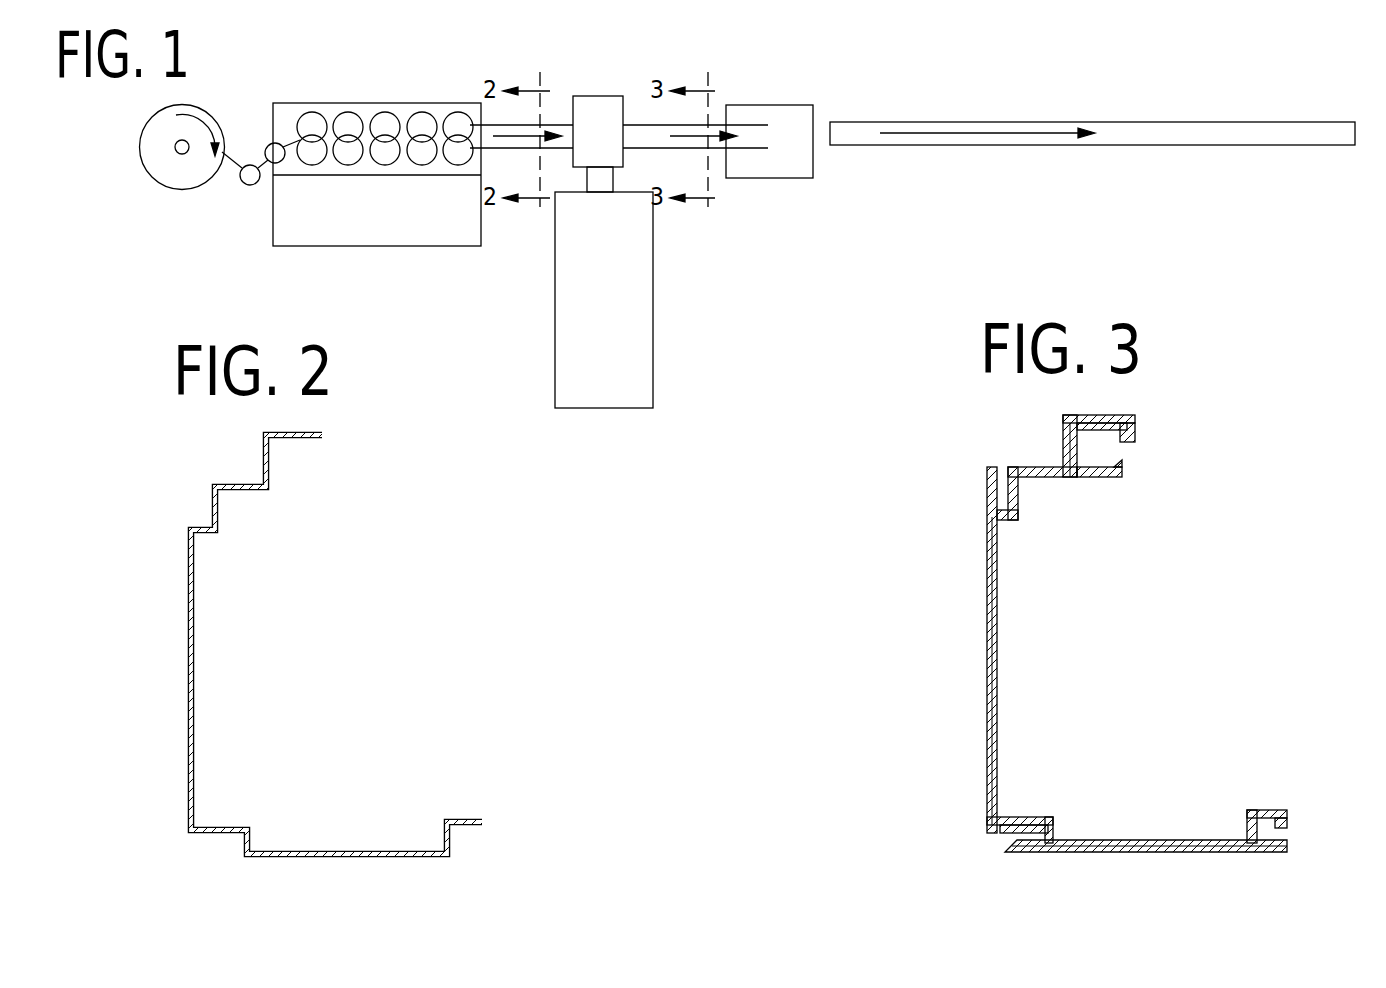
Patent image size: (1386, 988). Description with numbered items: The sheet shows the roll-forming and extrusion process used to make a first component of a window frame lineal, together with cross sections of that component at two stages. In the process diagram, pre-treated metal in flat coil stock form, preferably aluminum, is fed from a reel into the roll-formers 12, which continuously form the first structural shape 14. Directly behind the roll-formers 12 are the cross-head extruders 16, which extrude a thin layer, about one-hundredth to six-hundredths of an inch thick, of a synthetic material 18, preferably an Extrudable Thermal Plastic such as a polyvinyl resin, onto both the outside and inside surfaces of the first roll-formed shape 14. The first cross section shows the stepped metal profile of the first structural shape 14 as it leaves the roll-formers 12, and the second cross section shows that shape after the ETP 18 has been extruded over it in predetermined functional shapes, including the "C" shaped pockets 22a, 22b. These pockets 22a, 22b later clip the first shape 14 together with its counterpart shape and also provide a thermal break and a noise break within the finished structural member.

In FIG. 1, the roll-formers 12 is at (365, 103).
In FIG. 2, the first structural shape 14 is at (188, 732).
In FIG. 1, the cross-head extruders 16 is at (592, 96).
In FIG. 3, the synthetic material 18 is at (987, 487).
In FIG. 3, the "C" shaped pocket 22a is at (1135, 437).
In FIG. 3, the "C" shaped pocket 22b is at (1289, 822).